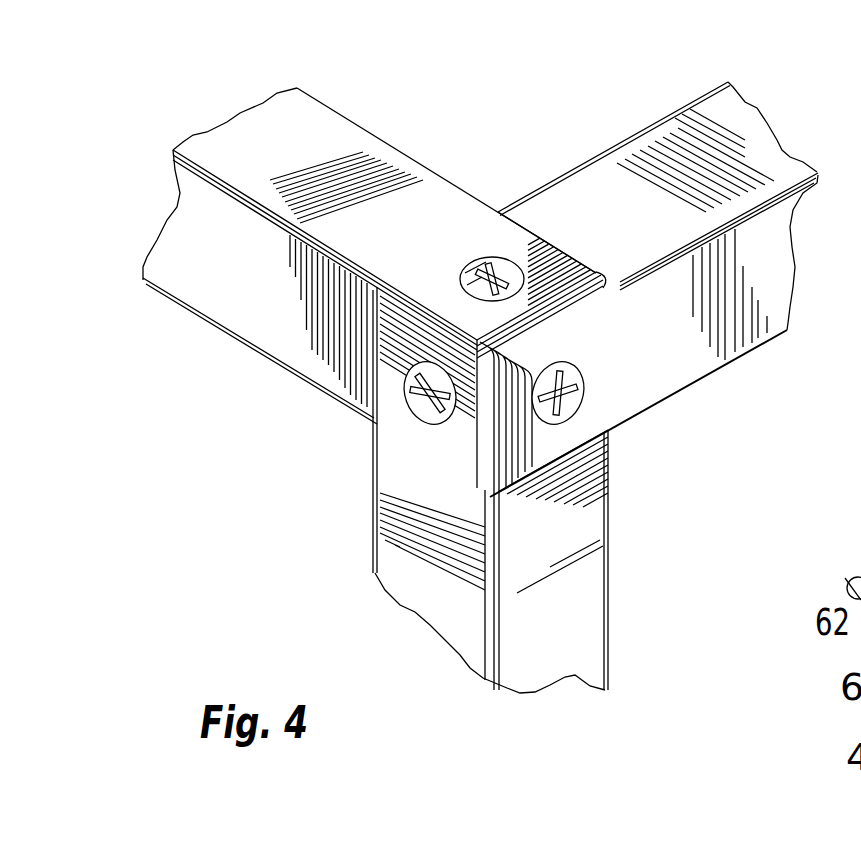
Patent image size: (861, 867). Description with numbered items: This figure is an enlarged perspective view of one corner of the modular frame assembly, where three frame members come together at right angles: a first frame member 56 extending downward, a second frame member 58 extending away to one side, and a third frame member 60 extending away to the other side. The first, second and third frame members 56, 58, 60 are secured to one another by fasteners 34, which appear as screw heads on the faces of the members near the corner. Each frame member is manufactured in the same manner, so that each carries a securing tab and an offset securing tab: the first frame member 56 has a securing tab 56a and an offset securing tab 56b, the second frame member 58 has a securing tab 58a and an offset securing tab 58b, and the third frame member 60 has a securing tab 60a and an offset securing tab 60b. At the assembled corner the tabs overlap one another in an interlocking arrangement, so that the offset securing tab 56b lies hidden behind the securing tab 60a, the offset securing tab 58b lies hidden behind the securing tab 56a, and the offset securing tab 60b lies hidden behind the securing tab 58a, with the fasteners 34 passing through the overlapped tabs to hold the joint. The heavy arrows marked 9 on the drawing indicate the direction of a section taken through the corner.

The fasteners 34 is at (481, 262).
The first frame member 56 is at (574, 615).
The securing tab 56a is at (410, 413).
The offset securing tab 56b is at (562, 469).
The second frame member 58 is at (257, 142).
The securing tab 58a is at (452, 307).
The offset securing tab 58b is at (362, 335).
The third frame member 60 is at (778, 160).
The securing tab 60a is at (548, 336).
The offset securing tab 60b is at (540, 226).
The section line 9- 9 is at (627, 265).